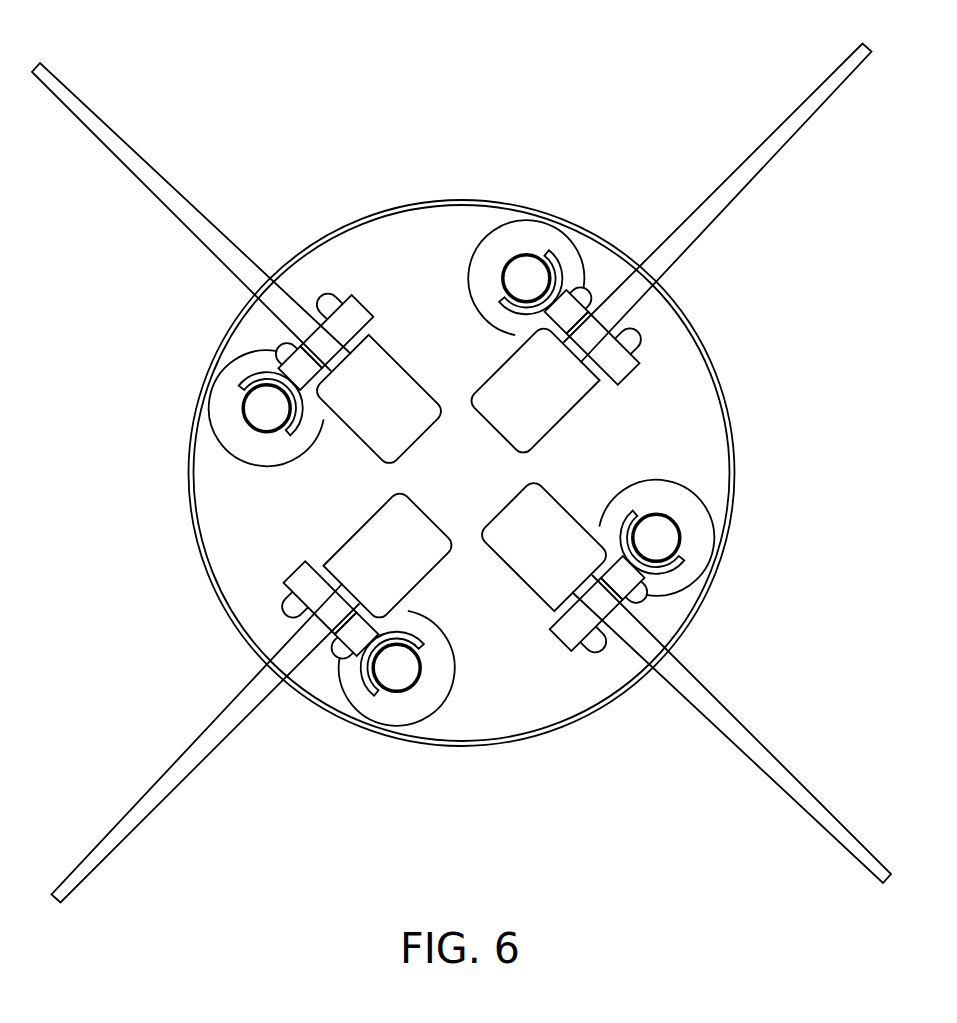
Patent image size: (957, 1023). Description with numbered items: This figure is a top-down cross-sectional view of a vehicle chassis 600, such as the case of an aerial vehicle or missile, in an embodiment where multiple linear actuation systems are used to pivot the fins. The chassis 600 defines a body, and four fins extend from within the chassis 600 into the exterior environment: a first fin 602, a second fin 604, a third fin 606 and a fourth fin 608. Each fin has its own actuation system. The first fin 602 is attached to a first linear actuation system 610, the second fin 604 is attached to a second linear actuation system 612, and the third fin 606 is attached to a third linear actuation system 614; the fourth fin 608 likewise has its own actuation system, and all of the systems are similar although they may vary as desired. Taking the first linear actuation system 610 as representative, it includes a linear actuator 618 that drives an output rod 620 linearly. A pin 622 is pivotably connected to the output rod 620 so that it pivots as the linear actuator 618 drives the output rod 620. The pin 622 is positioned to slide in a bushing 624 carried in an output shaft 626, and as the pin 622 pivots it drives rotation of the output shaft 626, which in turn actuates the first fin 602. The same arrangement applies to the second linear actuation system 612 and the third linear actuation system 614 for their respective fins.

The chassis 600 is at (462, 421).
The first fin 602 is at (191, 217).
The second fin 604 is at (206, 758).
The third fin 606 is at (731, 729).
The fourth fin 608 is at (492, 282).
The first linear actuation system 610 is at (393, 647).
The second linear actuation system 612 is at (655, 542).
The third linear actuation system 614 is at (531, 290).
The linear actuator 618 is at (225, 412).
The output rod 620 is at (221, 375).
The pin 622 is at (361, 409).
The bushing 624 is at (375, 303).
The output shaft 626 is at (313, 279).